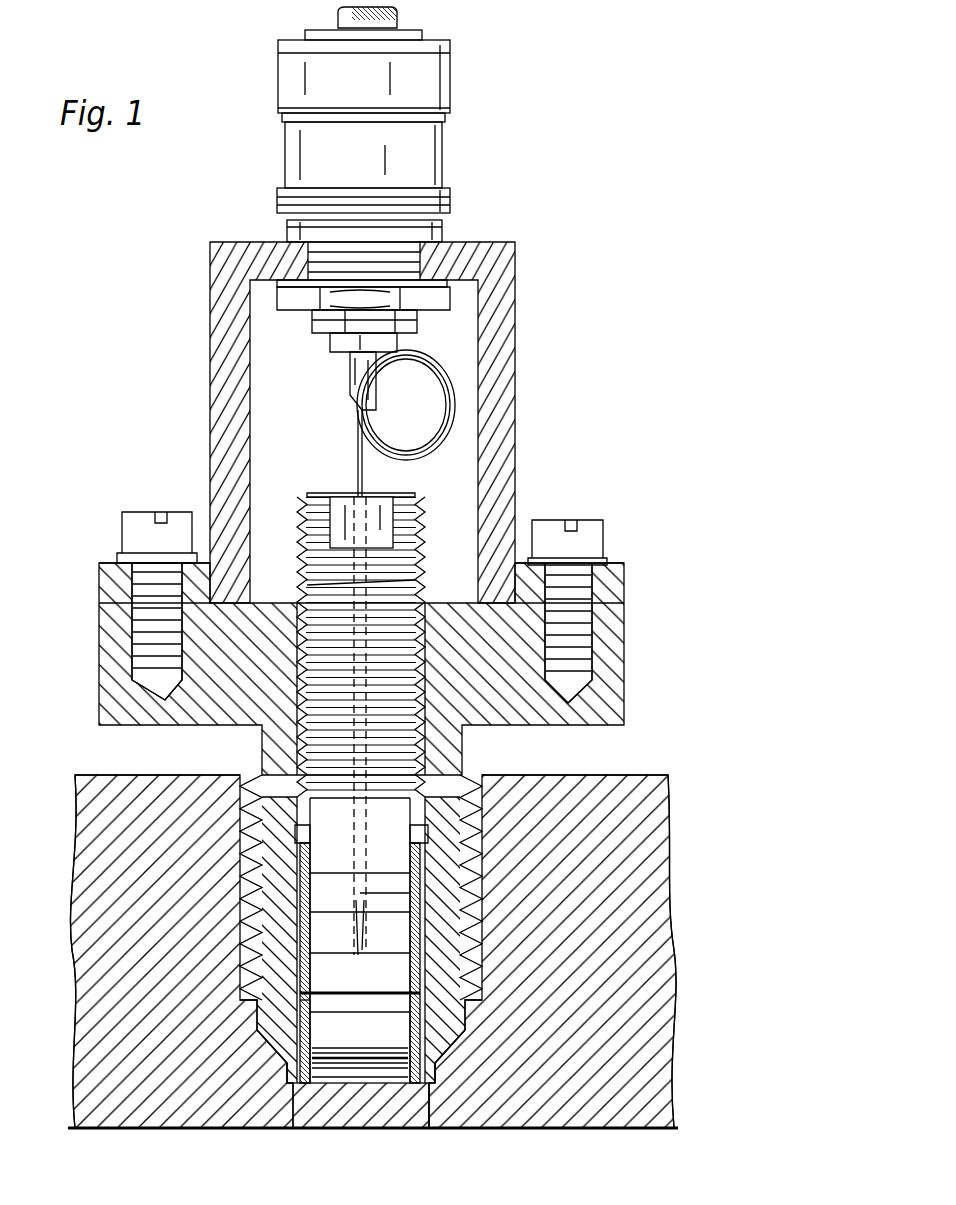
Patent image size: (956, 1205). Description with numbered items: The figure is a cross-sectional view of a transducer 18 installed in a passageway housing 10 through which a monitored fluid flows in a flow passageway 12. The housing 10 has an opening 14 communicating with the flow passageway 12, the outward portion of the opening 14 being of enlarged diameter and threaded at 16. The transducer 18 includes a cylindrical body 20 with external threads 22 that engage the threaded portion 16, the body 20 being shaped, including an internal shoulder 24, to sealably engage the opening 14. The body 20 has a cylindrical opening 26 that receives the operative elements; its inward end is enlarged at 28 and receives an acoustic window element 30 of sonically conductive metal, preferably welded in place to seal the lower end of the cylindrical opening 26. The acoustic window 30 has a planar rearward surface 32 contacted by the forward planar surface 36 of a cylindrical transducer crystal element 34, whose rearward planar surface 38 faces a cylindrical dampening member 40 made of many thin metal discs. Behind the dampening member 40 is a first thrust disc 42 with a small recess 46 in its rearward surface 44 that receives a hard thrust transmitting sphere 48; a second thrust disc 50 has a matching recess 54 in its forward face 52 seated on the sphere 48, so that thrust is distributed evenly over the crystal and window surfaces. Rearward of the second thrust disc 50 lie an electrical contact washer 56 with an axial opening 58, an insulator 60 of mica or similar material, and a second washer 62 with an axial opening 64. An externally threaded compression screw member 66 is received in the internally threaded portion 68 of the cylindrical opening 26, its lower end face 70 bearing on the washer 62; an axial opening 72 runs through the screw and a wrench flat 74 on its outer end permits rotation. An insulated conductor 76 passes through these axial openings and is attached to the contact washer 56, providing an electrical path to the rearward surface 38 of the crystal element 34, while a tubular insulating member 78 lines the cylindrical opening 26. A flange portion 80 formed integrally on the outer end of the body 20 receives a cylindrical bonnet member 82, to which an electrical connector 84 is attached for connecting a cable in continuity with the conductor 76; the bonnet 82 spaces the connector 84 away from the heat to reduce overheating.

The passageway housing 10 is at (108, 921).
The flow passageway 12 is at (90, 1128).
The opening 14 is at (298, 1128).
The threaded portion of opening 16 is at (268, 778).
The transducer 18 is at (657, 534).
The cylindrical body 20 is at (437, 775).
The external threads 22 is at (420, 805).
The internal shoulder 24 is at (272, 1038).
The cylindrical opening 26 is at (313, 858).
The enlarged diameter portion 28 is at (423, 1128).
The acoustic window element 30 is at (373, 1113).
The planar rearward surface 32 is at (335, 1077).
The transducer crystal element 34 is at (400, 1080).
The forward planar surface 36 is at (457, 1130).
The rearward planar surface 38 is at (400, 1057).
The dampening member 40 is at (413, 1033).
The first thrust disc 42 is at (413, 1017).
The rearward surface 44 is at (303, 1007).
The recess 46 is at (400, 977).
The thrust transmitting sphere 48 is at (348, 1003).
The second thrust disc 50 is at (413, 957).
The forward face 52 is at (310, 1003).
The recess 54 is at (357, 997).
The electrical contact washer 56 is at (400, 930).
The axial opening 58 is at (343, 927).
The insulator 60 is at (400, 917).
The second washer 62 is at (402, 893).
The axial opening 64 is at (347, 890).
The compression screw member 66 is at (403, 620).
The internally threaded portion 68 is at (300, 587).
The lower end face 70 is at (380, 885).
The axial opening 72 is at (398, 582).
The wrench flat 74 is at (395, 506).
The insulated conductor 76 is at (355, 463).
The tubular insulating member 78 is at (420, 860).
The flange portion 80 is at (610, 663).
The bonnet member 82 is at (500, 441).
The electrical connector 84 is at (318, 156).